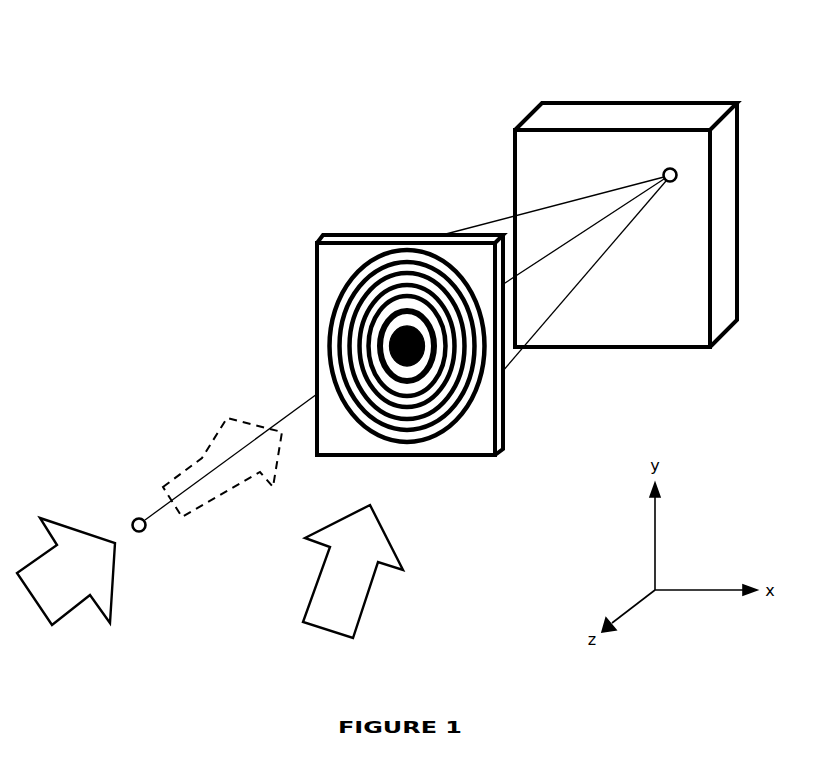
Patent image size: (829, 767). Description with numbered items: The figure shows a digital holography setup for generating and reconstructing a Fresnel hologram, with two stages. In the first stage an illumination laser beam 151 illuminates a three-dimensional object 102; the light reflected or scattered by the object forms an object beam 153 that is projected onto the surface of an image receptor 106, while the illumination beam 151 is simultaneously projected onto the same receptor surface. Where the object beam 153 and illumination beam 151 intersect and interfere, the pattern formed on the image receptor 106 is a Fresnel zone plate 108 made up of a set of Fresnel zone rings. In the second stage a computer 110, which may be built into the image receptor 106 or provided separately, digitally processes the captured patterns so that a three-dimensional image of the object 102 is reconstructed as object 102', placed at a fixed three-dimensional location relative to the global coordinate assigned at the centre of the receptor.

The three-dimensional object 102 is at (205, 463).
The reconstructed object 102' is at (589, 213).
The image receptor 106 is at (477, 465).
The Fresnel zone plate 108 is at (368, 322).
The computer 110 is at (567, 155).
The illumination laser beam 151 is at (105, 582).
The object beam 153 is at (202, 458).